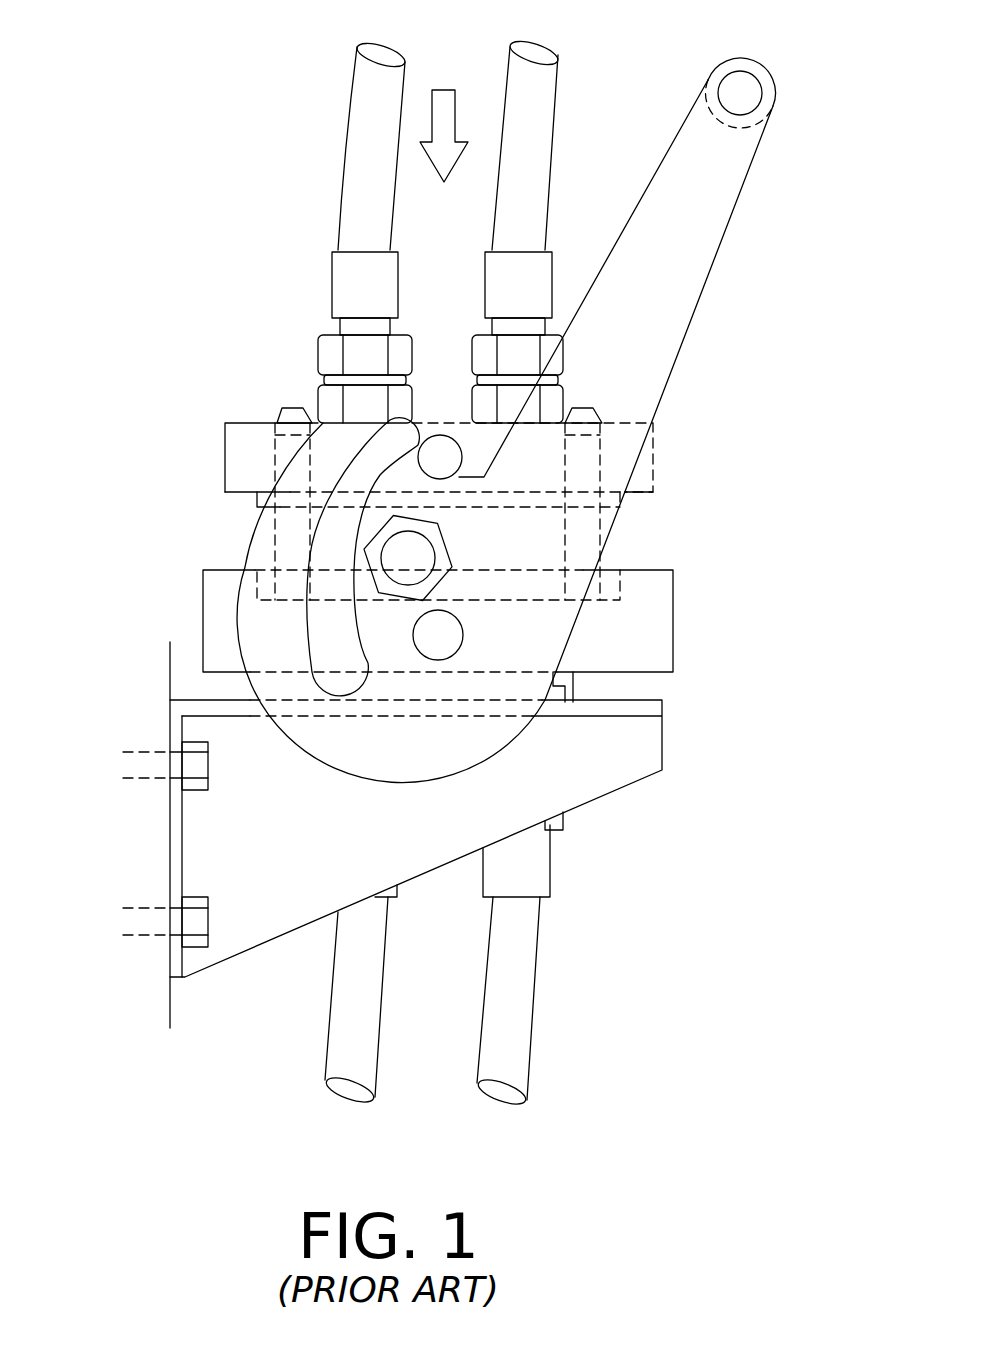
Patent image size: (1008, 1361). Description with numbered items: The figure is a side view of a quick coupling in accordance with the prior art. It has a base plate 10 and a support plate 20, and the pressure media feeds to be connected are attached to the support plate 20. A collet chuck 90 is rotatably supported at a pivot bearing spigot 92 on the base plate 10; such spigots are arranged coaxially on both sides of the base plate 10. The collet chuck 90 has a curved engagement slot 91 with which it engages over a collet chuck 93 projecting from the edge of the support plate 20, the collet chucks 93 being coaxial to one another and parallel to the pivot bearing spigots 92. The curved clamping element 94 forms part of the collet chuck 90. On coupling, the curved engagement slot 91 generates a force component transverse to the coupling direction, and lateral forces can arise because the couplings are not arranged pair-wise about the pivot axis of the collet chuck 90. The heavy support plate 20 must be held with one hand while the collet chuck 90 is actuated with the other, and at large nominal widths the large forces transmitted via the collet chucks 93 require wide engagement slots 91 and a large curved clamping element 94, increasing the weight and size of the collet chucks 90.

The base plate 10 is at (673, 618).
The support plate 20 is at (653, 461).
The collet chuck 90 is at (670, 262).
The curved engagement slot 91 is at (333, 637).
The pivot bearing spigot 92 is at (450, 640).
The collet chuck 93 is at (437, 452).
The curved clamping element 94 is at (332, 473).